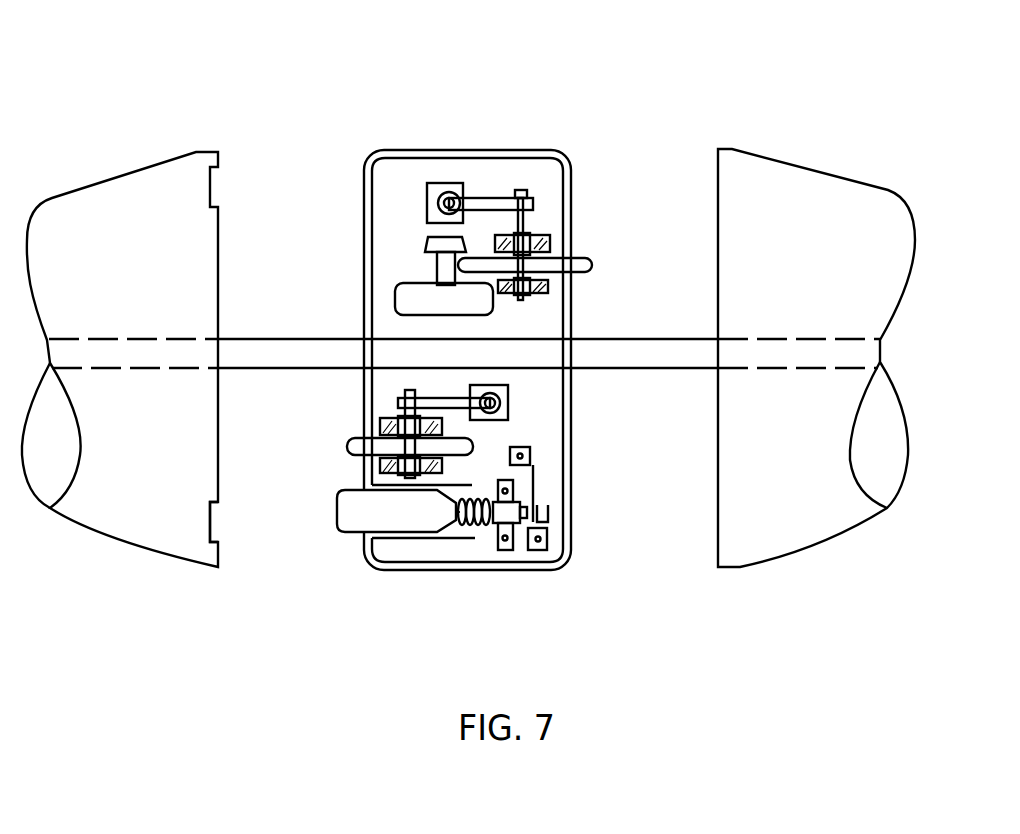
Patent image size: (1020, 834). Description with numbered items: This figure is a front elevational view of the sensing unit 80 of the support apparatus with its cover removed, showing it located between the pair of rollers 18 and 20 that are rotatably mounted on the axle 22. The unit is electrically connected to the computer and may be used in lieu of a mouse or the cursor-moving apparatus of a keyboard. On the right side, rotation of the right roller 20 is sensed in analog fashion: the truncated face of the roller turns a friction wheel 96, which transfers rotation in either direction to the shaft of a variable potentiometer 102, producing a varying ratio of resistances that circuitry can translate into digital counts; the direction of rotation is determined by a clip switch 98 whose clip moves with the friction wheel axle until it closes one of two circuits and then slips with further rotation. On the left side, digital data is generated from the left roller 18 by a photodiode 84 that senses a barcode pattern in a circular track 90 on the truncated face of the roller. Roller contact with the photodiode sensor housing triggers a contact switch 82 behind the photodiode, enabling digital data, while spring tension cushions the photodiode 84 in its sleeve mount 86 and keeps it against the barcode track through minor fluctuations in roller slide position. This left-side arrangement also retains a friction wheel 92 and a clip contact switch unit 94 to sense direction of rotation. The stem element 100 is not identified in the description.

The roller 18 is at (187, 250).
The roller 20 is at (773, 197).
The axle 22 is at (612, 337).
The sensing unit 80 is at (582, 440).
The contact switch 82 is at (533, 481).
The photodiode 84 is at (338, 493).
The sleeve mount 86 is at (520, 524).
The circular track 90 is at (212, 522).
The friction wheel 92 is at (348, 440).
The clip contact switch unit 94 is at (508, 393).
The friction wheel 96 is at (590, 258).
The clip switch 98 is at (462, 194).
The stem 100 is at (436, 272).
The variable potentiometer 102 is at (395, 296).